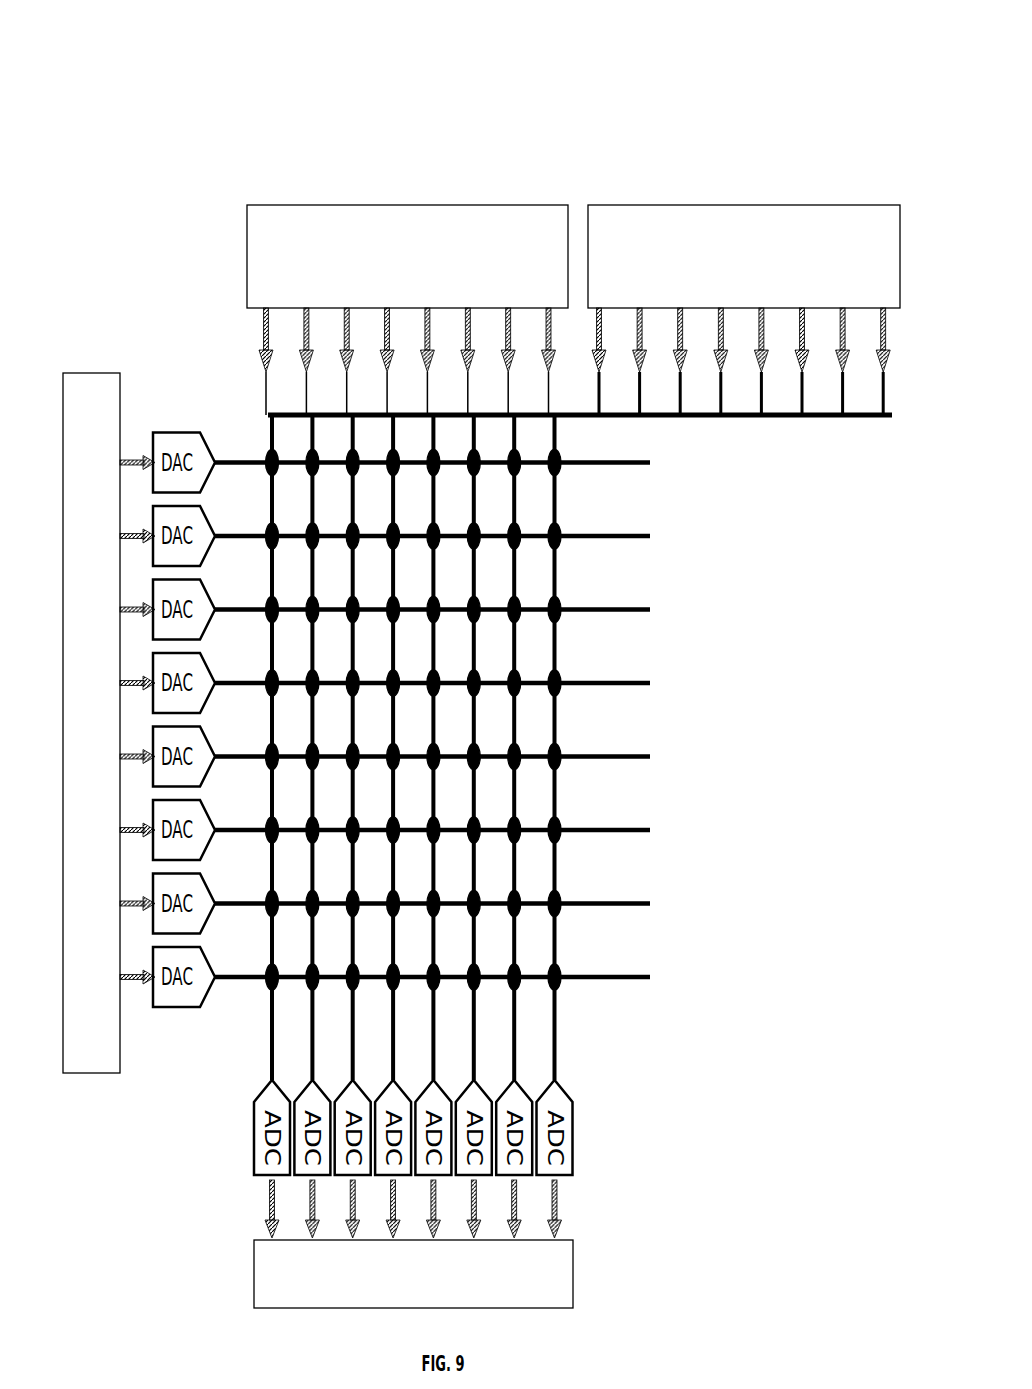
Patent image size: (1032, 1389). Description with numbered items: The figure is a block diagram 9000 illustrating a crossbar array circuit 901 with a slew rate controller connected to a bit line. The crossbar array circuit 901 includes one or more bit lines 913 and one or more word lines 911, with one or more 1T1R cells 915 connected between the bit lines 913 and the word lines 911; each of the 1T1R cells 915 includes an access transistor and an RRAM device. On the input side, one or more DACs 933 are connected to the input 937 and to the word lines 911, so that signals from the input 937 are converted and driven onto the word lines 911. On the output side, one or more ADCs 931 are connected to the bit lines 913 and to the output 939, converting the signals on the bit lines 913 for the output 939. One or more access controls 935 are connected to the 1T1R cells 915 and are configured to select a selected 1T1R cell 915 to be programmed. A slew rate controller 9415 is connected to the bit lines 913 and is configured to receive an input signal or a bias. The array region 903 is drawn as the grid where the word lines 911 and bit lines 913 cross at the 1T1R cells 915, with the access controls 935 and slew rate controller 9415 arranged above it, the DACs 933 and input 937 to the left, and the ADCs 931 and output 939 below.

The block diagram 9000 is at (412, 24).
The crossbar array circuit 901 is at (107, 165).
The crossbar array 903 is at (537, 712).
The word line 911 is at (273, 495).
The bit line 913 is at (292, 457).
The 1T1R cell 915 is at (266, 455).
The ADC 931 is at (600, 1083).
The DAC 933 is at (205, 1022).
The access control 935 is at (247, 253).
The input 937 is at (92, 373).
The output 939 is at (573, 1273).
The slew rate controller 9415 is at (640, 203).